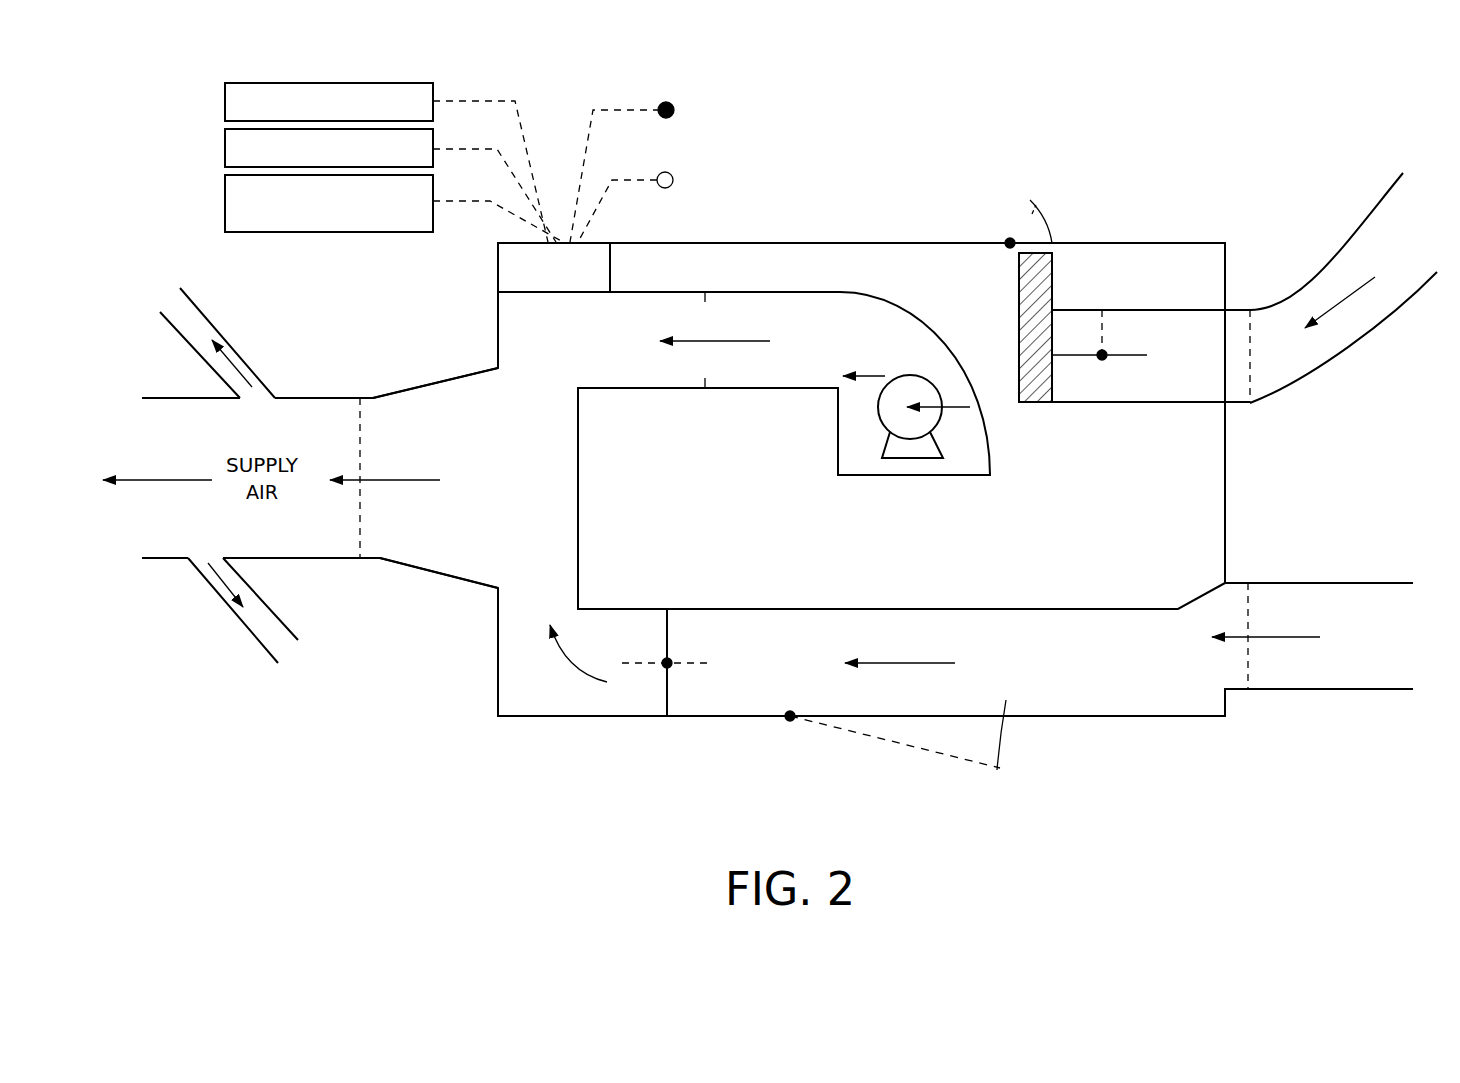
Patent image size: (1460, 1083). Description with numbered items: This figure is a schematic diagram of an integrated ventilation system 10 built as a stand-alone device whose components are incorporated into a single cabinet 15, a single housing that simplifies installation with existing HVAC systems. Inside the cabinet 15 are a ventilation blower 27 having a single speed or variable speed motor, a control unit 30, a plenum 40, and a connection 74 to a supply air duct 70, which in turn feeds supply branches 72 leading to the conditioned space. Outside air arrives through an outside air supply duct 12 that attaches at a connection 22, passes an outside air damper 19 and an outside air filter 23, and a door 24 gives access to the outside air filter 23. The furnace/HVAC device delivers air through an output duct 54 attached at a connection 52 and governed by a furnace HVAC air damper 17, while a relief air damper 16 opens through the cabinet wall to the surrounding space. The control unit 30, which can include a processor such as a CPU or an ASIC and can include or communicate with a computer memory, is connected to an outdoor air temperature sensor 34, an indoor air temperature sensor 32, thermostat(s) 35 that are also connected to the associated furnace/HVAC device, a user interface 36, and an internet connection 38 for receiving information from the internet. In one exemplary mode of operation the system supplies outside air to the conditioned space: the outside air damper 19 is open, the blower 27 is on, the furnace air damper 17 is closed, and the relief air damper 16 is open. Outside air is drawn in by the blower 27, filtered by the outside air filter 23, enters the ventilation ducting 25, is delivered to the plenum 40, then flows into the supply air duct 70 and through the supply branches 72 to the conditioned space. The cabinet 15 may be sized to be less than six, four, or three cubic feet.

The integrated ventilation system 10 is at (692, 508).
The outside air supply duct 12 is at (1346, 250).
The cabinet 15 is at (1226, 488).
The relief air damper 16 is at (921, 746).
The furnace HVAC air damper 17 is at (667, 697).
The outside air damper 19 is at (1127, 353).
The connection for an outside air supply duct 22 is at (1249, 404).
The outside air filter 23 is at (1035, 404).
The door 24 is at (1020, 228).
The ventilation ducting 25 is at (838, 462).
The ventilation blower 27 is at (942, 396).
The control unit 30 is at (498, 280).
The indoor air temperature sensor 32 is at (674, 104).
The outdoor air temperature sensor 34 is at (673, 178).
The thermostat(s) 35 is at (225, 101).
The user interface 36 is at (225, 149).
The internet connection 38 is at (225, 205).
The plenum 40 is at (494, 491).
The connection for an output duct 52 is at (1248, 585).
The output duct 54 is at (1308, 690).
The supply air duct 70 is at (297, 560).
The supply branches 72 is at (235, 346).
The connection to supply air duct 74 is at (362, 406).